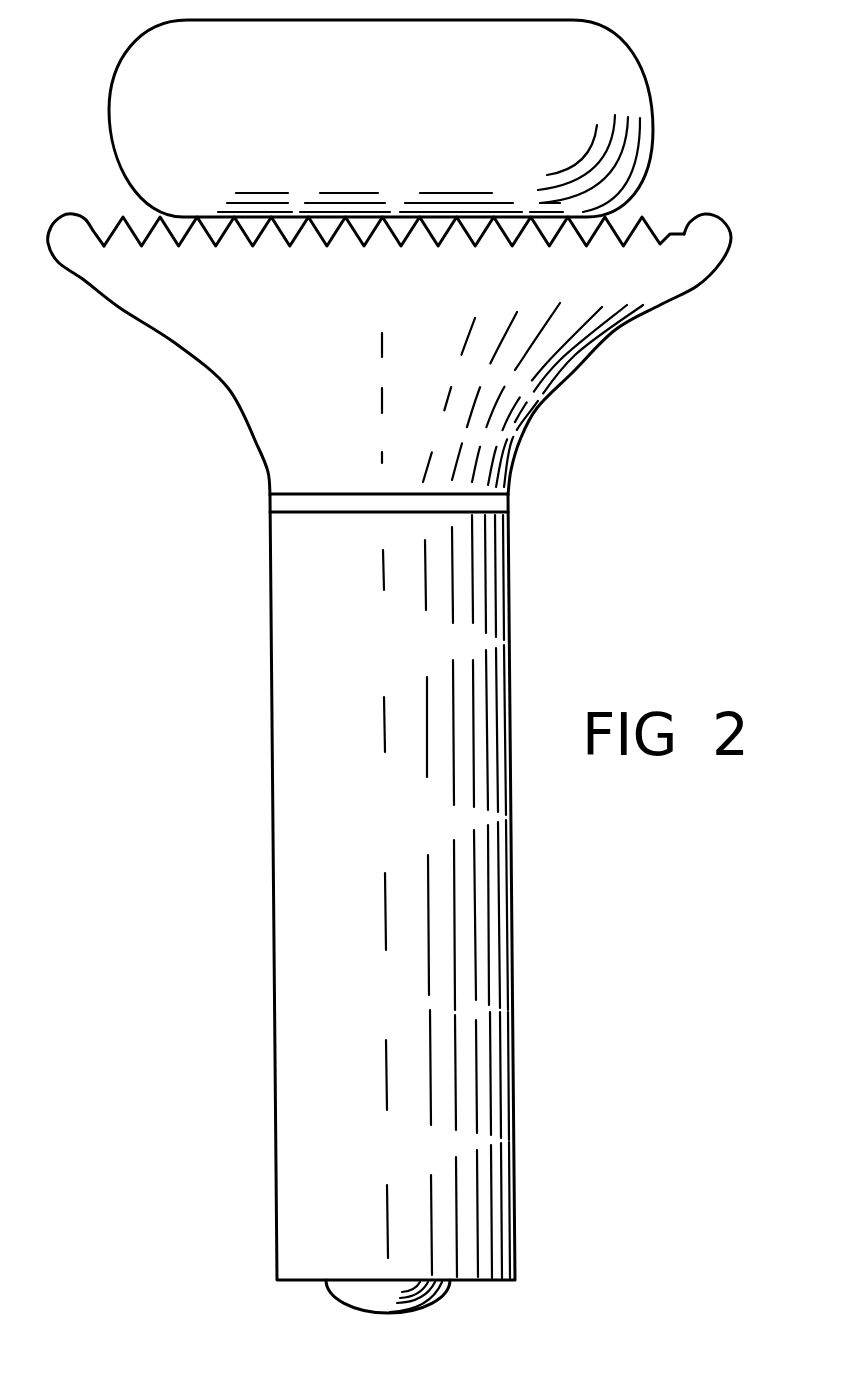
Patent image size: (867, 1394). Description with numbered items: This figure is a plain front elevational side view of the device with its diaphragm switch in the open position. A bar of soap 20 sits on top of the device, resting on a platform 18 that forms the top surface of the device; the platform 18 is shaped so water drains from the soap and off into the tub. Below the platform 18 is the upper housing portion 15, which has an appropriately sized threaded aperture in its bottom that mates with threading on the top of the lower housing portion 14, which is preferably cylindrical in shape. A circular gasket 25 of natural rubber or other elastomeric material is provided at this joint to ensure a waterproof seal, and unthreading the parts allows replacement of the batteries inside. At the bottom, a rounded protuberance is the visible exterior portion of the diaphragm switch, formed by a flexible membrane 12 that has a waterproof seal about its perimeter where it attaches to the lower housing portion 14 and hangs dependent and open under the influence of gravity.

The bar of soap 20 is at (137, 68).
The platform 18 is at (122, 216).
The upper housing portion 15 is at (245, 395).
The circular gasket 25 is at (275, 505).
The lower housing portion 14 is at (285, 843).
The flexible membrane 12 is at (362, 1296).